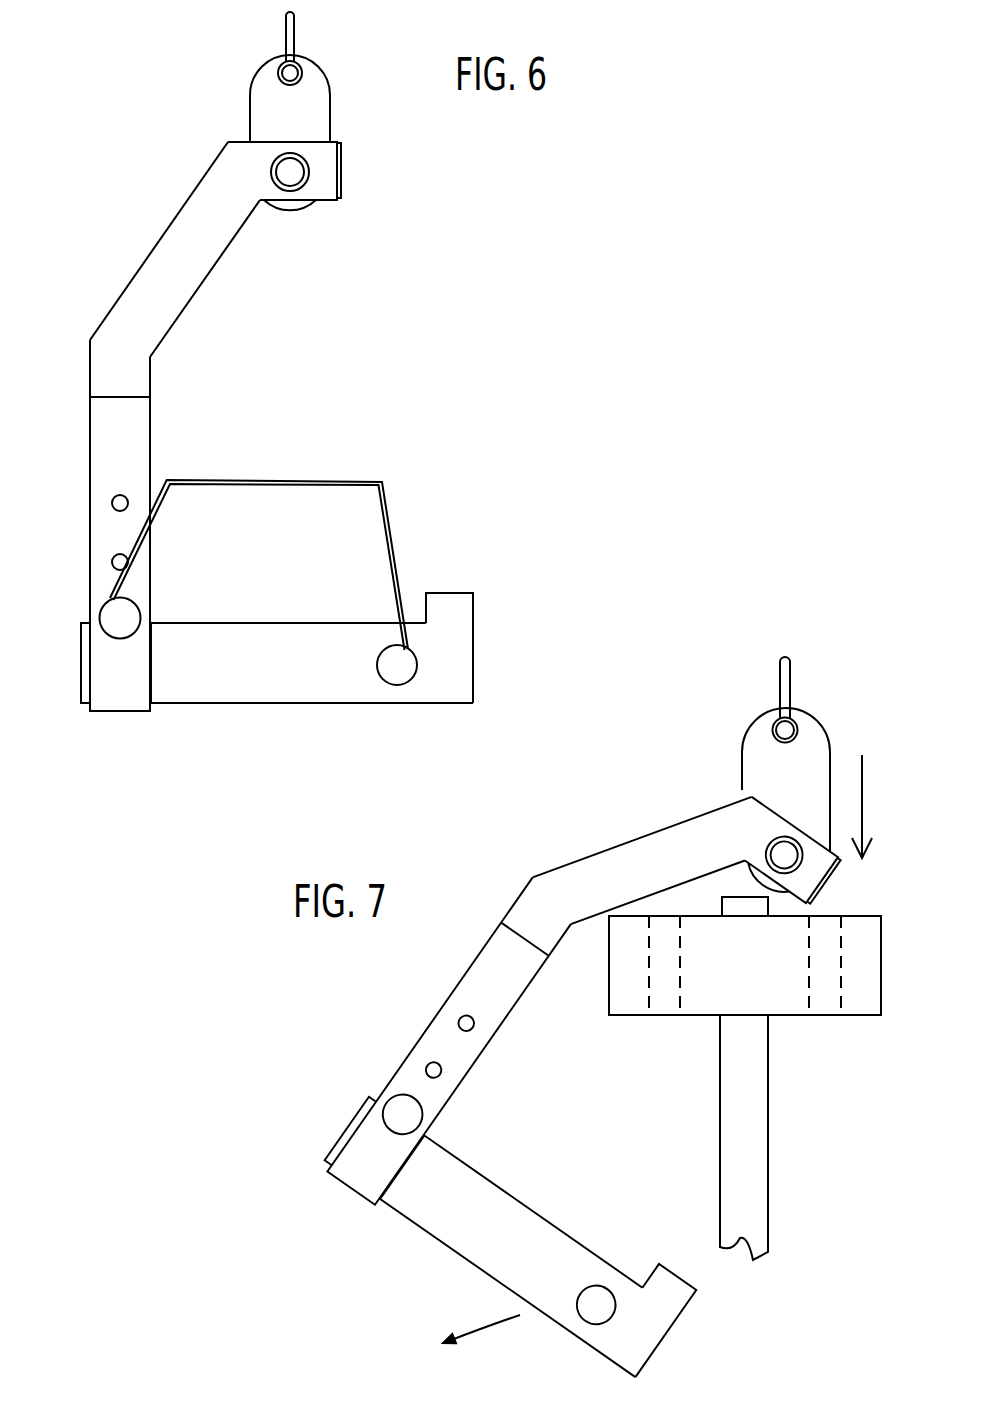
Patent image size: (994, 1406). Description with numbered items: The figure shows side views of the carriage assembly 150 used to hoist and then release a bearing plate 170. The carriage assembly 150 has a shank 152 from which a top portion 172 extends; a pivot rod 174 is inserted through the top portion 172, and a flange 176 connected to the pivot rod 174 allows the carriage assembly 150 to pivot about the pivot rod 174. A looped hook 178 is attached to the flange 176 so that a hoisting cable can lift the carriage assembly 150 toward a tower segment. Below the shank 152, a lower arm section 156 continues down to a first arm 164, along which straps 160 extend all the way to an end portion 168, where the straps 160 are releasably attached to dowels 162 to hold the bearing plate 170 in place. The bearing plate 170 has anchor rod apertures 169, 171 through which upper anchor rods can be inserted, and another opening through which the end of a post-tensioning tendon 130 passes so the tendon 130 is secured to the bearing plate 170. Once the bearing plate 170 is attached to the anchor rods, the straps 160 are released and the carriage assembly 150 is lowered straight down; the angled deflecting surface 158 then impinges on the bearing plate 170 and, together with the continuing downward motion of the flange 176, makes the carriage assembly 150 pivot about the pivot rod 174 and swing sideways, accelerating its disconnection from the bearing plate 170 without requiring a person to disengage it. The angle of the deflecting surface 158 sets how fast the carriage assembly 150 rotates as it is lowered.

In FIG. 7, the post-tensioning tendon 130 is at (747, 1120).
In FIG. 6, the carriage assembly 150 is at (443, 246).
In FIG. 7, the carriage assembly 150 is at (843, 670).
In FIG. 6, the shank 152 is at (140, 218).
In FIG. 7, the shank 152 is at (552, 851).
In FIG. 6, the lower arm section 156 is at (115, 462).
In FIG. 7, the lower arm section 156 is at (443, 1038).
In FIG. 6, the deflecting surface 158 is at (202, 287).
In FIG. 7, the deflecting surface 158 is at (586, 925).
In FIG. 6, the straps 160 is at (278, 482).
In FIG. 6, the dowels 162 is at (118, 618).
In FIG. 7, the dowels 162 is at (403, 1110).
In FIG. 6, the first arm 164 is at (280, 667).
In FIG. 7, the first arm 164 is at (518, 1232).
In FIG. 6, the end portion 168 is at (475, 662).
In FIG. 7, the end portion 168 is at (662, 1347).
In FIG. 7, the anchor rod aperture 169 is at (681, 947).
In FIG. 7, the bearing plate 170 is at (862, 963).
In FIG. 7, the anchor rod aperture 171 is at (808, 985).
In FIG. 6, the top portion 172 is at (323, 173).
In FIG. 7, the top portion 172 is at (810, 875).
In FIG. 7, the pivot rod 174 is at (787, 852).
In FIG. 6, the flange 176 is at (270, 103).
In FIG. 7, the flange 176 is at (765, 758).
In FIG. 6, the looped hook 178 is at (290, 35).
In FIG. 7, the looped hook 178 is at (783, 685).